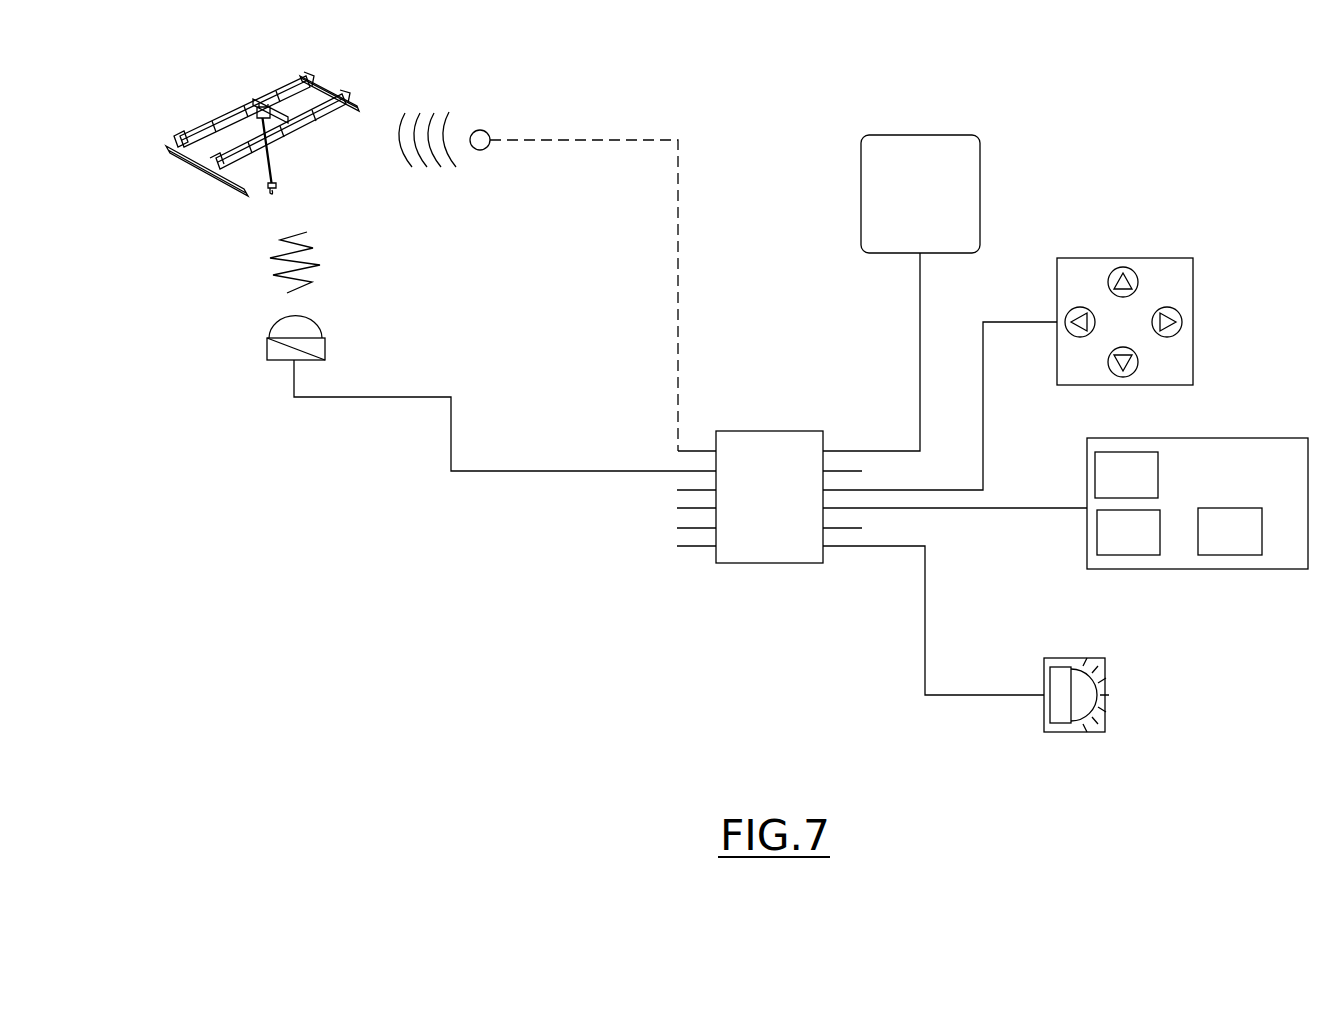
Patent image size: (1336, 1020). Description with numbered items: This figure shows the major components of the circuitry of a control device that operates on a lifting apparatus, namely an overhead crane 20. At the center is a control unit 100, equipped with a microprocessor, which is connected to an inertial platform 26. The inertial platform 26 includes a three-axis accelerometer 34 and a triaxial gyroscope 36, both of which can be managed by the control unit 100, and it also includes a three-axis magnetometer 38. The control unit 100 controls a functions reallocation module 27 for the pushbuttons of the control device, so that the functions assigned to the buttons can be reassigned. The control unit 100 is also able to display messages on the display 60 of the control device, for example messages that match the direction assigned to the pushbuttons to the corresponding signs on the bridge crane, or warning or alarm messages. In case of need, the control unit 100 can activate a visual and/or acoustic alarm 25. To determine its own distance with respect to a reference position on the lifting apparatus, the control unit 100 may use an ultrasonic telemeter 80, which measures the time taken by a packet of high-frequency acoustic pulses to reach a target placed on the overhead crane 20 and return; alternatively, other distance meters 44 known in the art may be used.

The overhead crane 20 is at (176, 112).
The distance meters 44 is at (481, 128).
The ultrasonic telemeter 80 is at (320, 323).
The display 60 is at (861, 192).
The functions reallocation module 27 is at (1122, 258).
The inertial platform 26 is at (1228, 438).
The three-axis magnetometer 38 is at (1095, 477).
The three-axis accelerometer 34 is at (1115, 555).
The triaxial gyroscope 36 is at (1237, 555).
The control unit 100 is at (745, 507).
The visual and/or acoustic alarm 25 is at (1043, 722).